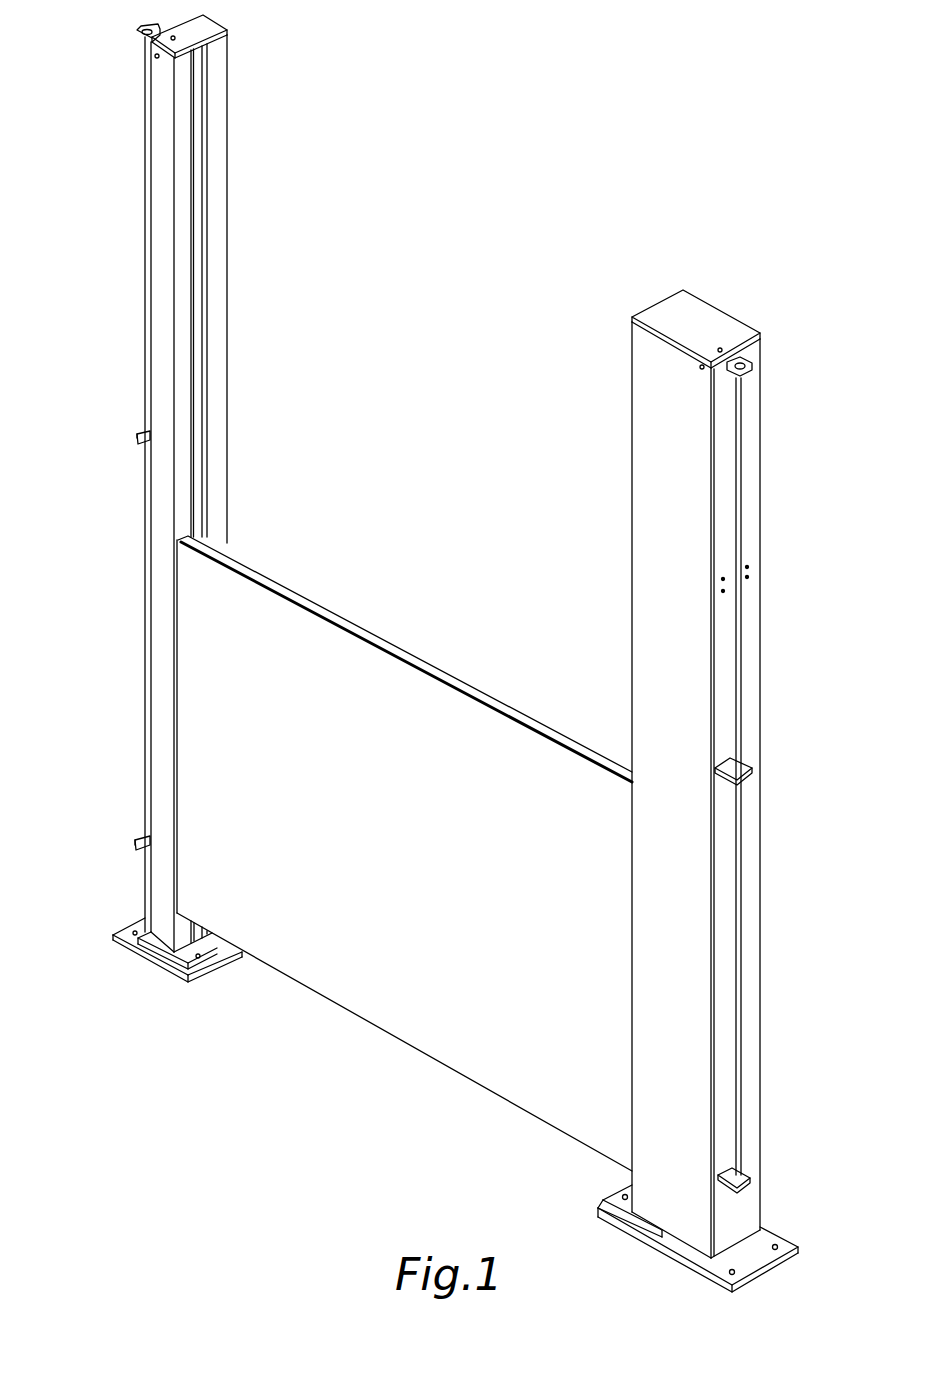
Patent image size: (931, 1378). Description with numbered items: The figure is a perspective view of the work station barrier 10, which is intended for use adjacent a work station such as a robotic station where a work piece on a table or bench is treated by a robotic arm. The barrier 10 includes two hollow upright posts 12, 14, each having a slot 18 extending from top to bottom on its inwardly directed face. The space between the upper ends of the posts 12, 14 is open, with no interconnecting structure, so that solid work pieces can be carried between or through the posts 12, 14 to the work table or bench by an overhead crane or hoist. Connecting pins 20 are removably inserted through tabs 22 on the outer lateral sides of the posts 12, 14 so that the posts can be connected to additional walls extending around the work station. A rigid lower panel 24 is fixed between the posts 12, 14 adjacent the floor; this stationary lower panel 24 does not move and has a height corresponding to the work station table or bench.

The work station barrier 10 is at (100, 620).
The upright post 12 is at (645, 436).
The upright post 14 is at (160, 110).
The slot 18 is at (206, 84).
The connecting pin 20 is at (148, 181).
The tab 22 is at (143, 32).
The rigid lower panel 24 is at (383, 830).